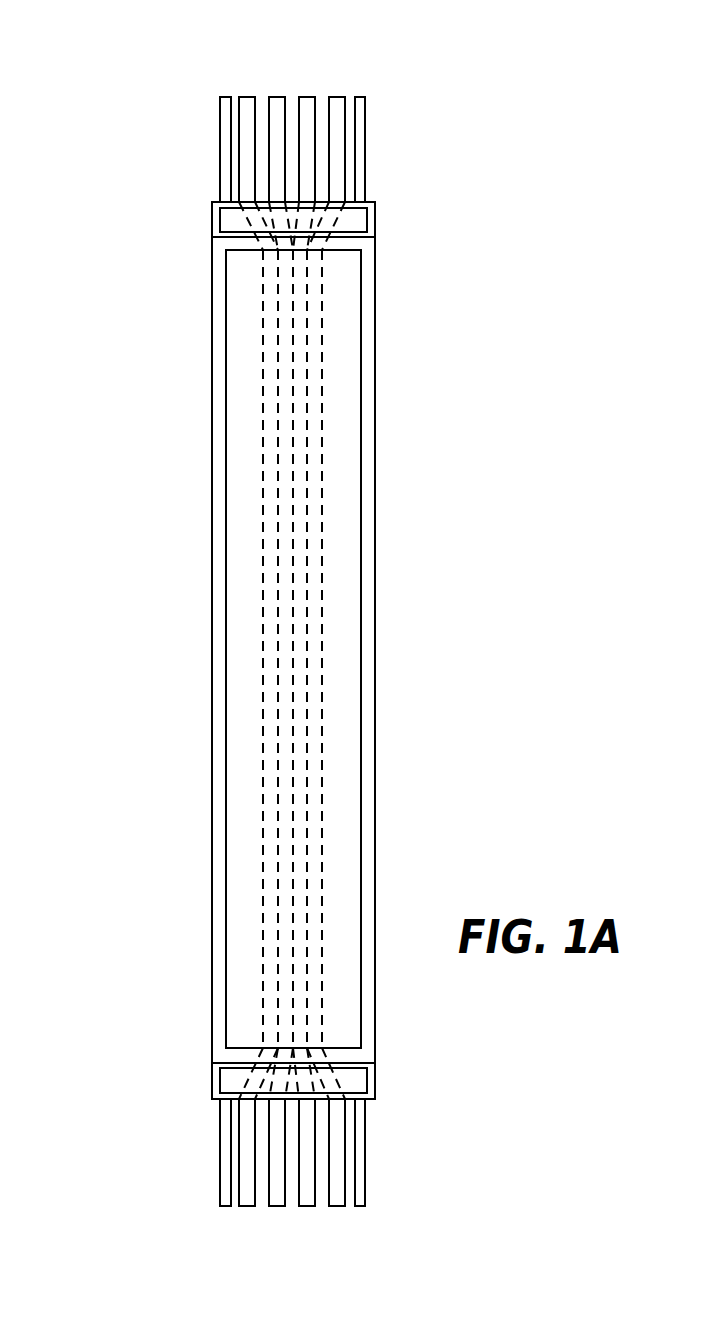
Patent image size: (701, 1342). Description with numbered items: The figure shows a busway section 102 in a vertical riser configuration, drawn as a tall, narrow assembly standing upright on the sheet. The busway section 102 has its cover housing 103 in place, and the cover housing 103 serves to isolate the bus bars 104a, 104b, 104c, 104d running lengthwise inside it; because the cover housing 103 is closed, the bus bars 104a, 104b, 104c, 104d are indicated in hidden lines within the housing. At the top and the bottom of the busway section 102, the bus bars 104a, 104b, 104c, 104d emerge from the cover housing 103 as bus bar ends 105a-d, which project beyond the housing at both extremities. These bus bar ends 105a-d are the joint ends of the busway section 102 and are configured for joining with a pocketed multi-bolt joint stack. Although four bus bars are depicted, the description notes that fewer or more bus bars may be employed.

The busway section 102 is at (145, 640).
The cover housing 103 is at (347, 605).
The bus bar 104a is at (263, 733).
The bus bar 104b is at (278, 752).
The bus bar 104c is at (307, 751).
The bus bar 104d is at (322, 767).
The bus bar ends 105a-d is at (355, 80).